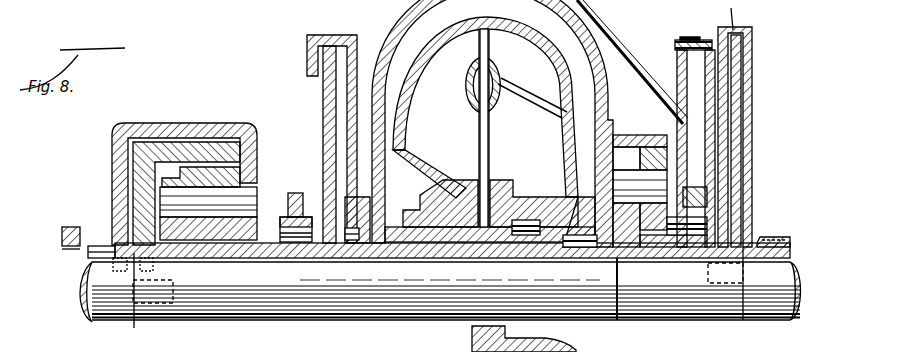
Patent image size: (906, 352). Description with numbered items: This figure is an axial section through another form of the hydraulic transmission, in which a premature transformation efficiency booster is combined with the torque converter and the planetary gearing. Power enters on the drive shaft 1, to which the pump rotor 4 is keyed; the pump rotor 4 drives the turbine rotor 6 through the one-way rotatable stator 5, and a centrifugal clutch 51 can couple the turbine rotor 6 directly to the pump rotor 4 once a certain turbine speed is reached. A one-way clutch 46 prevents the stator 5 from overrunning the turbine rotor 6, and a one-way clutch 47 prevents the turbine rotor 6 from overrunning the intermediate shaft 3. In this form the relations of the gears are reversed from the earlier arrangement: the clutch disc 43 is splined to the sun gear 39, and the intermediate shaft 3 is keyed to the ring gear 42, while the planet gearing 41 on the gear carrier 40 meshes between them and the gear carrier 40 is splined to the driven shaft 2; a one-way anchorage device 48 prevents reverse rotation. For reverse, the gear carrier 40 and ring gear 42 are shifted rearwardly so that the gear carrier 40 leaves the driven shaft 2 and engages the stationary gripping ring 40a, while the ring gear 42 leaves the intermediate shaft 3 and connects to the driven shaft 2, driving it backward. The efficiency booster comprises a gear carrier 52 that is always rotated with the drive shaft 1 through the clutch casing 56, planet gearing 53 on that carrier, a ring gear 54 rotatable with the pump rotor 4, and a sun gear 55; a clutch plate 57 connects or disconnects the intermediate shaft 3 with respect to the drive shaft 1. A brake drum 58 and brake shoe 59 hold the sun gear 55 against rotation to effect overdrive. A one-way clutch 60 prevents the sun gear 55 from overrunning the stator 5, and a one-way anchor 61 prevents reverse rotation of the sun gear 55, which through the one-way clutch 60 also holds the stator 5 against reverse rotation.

The drive shaft 1 is at (781, 294).
The driven shaft 2 is at (122, 313).
The intermediate shaft 3 is at (335, 305).
The pump rotor 4 is at (460, 48).
The stator 5 is at (503, 138).
The turbine rotor 6 is at (531, 83).
The sun gear 39 is at (217, 254).
The gear carrier 40 is at (123, 190).
The stationary gripping ring 40a is at (63, 234).
The planet gearing 41 is at (201, 170).
The ring gear 42 is at (174, 156).
The clutch disc 43 is at (318, 68).
The one-way clutch 46 is at (527, 236).
The one-way clutch 47 is at (587, 248).
The one-way anchorage device 48 is at (286, 217).
The centrifugal clutch 51 is at (613, 143).
The gear carrier 52 is at (655, 157).
The planet gearing 53 is at (632, 163).
The ring gear 54 is at (658, 173).
The sun gear 55 is at (658, 248).
The clutch casing 56 is at (740, 27).
The clutch plate 57 is at (743, 15).
The brake drum 58 is at (676, 50).
The brake shoe 59 is at (687, 37).
The one-way clutch 60 is at (690, 236).
The one-way anchor 61 is at (757, 262).